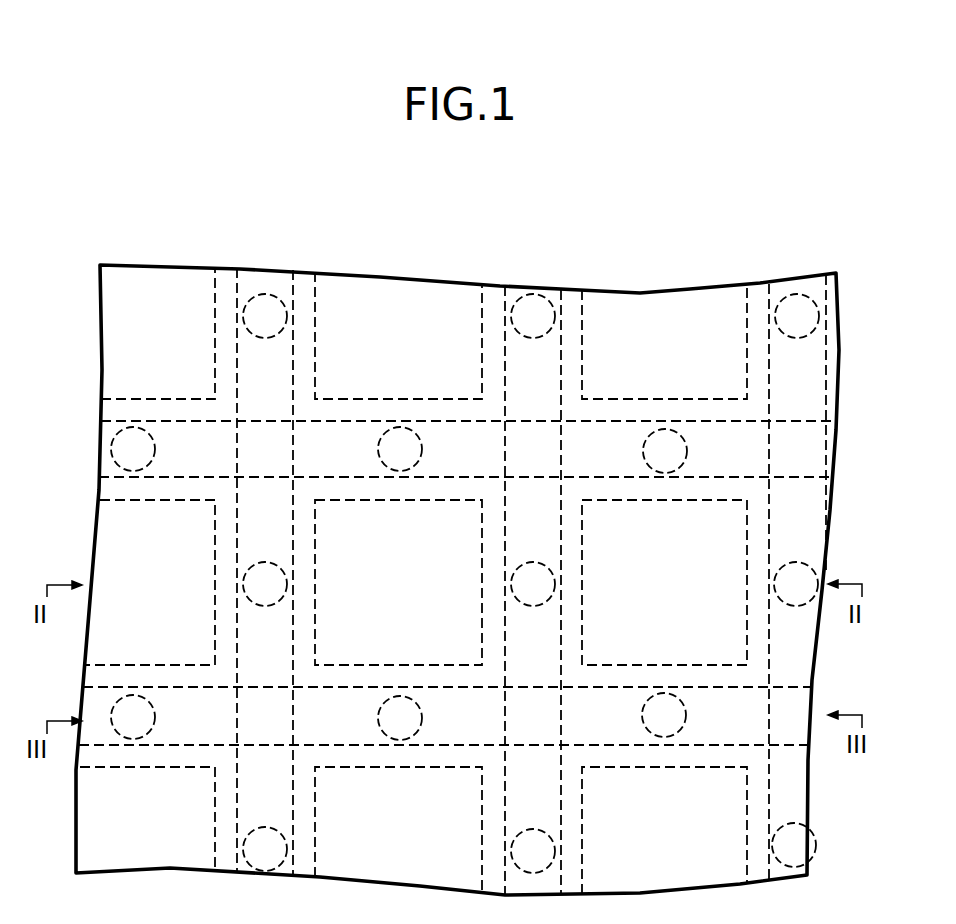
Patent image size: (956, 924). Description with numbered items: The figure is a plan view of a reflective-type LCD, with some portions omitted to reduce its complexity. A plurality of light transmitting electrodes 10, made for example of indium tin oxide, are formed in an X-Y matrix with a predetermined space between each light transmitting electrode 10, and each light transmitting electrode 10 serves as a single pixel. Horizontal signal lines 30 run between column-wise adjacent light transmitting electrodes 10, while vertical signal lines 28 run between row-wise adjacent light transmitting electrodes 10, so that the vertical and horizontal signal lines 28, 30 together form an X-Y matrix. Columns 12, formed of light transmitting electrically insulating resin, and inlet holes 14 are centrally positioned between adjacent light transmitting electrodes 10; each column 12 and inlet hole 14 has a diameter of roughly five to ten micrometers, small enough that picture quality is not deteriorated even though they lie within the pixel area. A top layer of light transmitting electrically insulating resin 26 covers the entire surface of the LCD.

The light transmitting electrode 10 is at (735, 534).
The column 12 is at (802, 563).
The inlet hole 14 is at (676, 456).
The top layer of light transmitting electrically insulating resin 26 is at (668, 318).
The vertical signal line 28 is at (276, 284).
The horizontal signal line 30 is at (178, 433).